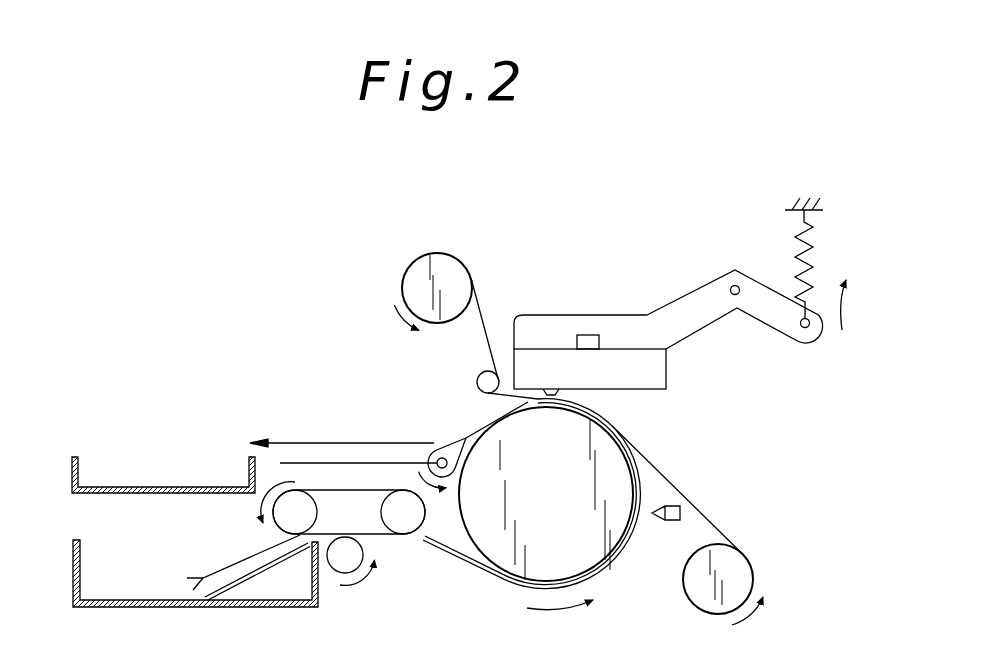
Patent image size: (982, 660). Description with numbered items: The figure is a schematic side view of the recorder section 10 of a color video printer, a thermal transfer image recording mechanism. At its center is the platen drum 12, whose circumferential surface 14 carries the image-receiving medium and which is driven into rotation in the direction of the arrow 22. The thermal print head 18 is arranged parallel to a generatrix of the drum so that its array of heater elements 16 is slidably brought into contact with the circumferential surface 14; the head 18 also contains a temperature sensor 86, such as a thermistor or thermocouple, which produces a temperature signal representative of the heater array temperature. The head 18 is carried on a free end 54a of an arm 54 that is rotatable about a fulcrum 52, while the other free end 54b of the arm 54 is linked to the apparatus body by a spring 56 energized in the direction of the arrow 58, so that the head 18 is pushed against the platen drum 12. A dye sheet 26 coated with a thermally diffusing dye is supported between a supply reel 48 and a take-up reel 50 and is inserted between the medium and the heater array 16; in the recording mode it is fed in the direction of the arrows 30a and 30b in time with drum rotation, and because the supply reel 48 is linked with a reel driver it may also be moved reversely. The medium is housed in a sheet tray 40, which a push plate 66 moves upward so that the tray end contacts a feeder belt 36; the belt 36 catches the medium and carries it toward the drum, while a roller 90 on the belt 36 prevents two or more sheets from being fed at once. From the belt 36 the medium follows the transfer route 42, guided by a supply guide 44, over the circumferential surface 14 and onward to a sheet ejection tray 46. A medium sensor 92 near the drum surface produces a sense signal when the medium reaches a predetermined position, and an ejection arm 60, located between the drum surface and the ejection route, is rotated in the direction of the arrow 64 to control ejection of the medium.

The recorder section 10 is at (259, 312).
The platen drum 12 is at (612, 467).
The circumferential surface 14 is at (472, 543).
The array of heater elements 16 is at (605, 402).
The thermal print head 18 is at (666, 363).
The arrow 22 is at (567, 610).
The dye sheet 26 is at (722, 525).
The arrow 30a is at (407, 325).
The arrow 30b is at (750, 613).
The feeder belt 36 is at (380, 535).
The sheet tray 40 is at (118, 607).
The transfer route 42 is at (417, 543).
The supply guide 44 is at (503, 583).
The sheet ejection tray 46 is at (73, 457).
The supply reel 48 is at (743, 576).
The take-up reel 50 is at (417, 282).
The fulcrum 52 is at (737, 287).
The arm 54 is at (690, 290).
The free end of arm 54a is at (550, 315).
The other free end of arm 54b is at (822, 333).
The spring 56 is at (812, 250).
The arrow 58 is at (848, 305).
The ejection arm 60 is at (452, 447).
The arrow 64 is at (436, 492).
The push plate 66 is at (258, 577).
The temperature sensor 86 is at (594, 335).
The roller 90 is at (332, 573).
The medium sensor 92 is at (672, 520).